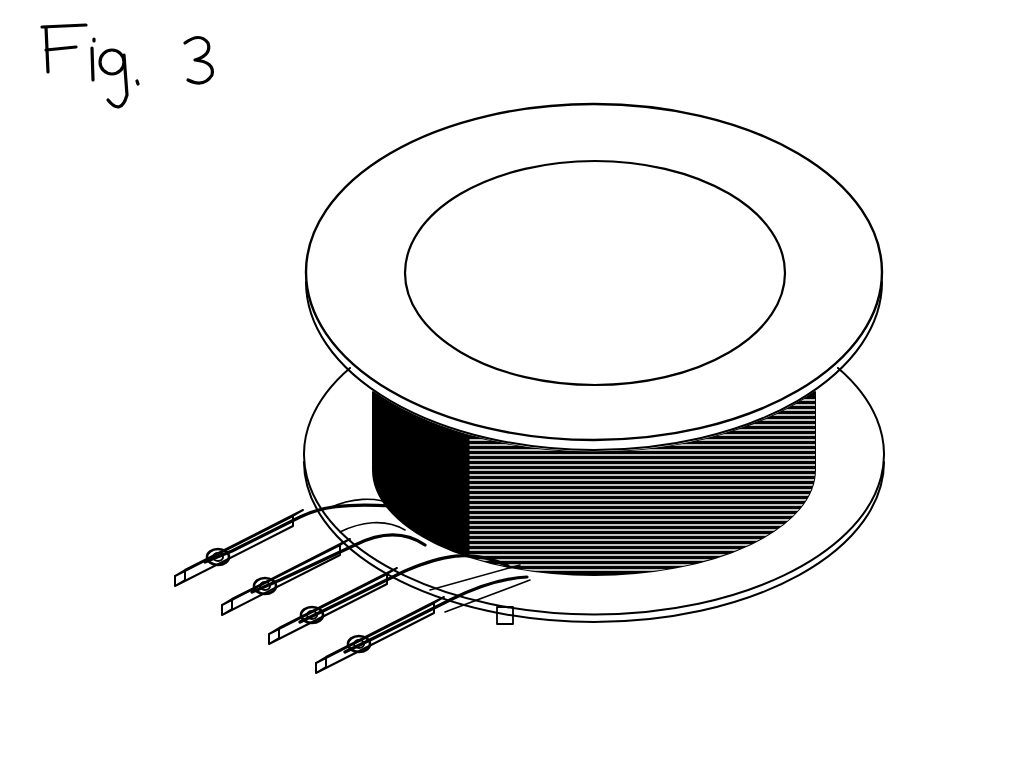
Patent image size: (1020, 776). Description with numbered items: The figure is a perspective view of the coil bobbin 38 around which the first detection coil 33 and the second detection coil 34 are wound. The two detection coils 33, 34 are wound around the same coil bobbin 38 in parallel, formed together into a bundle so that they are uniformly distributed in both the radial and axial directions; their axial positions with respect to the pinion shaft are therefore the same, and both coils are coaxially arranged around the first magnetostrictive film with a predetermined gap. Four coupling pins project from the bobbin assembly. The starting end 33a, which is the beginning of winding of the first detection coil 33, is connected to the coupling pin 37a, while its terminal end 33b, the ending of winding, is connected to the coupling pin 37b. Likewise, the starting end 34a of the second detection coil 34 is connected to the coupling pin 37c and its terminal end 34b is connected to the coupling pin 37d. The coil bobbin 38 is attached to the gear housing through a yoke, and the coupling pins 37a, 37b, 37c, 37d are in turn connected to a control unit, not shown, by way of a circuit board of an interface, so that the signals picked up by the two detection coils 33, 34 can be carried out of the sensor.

The first detection coil 33 is at (512, 606).
The starting end 33a is at (430, 665).
The terminal end 33b is at (325, 648).
The second detection coil 34 is at (307, 490).
The starting end 34a is at (275, 597).
The terminal end 34b is at (288, 520).
The coupling pin 37a is at (324, 668).
The coupling pin 37b is at (277, 638).
The coupling pin 37c is at (225, 606).
The coupling pin 37d is at (178, 577).
The coil bobbin 38 is at (790, 178).